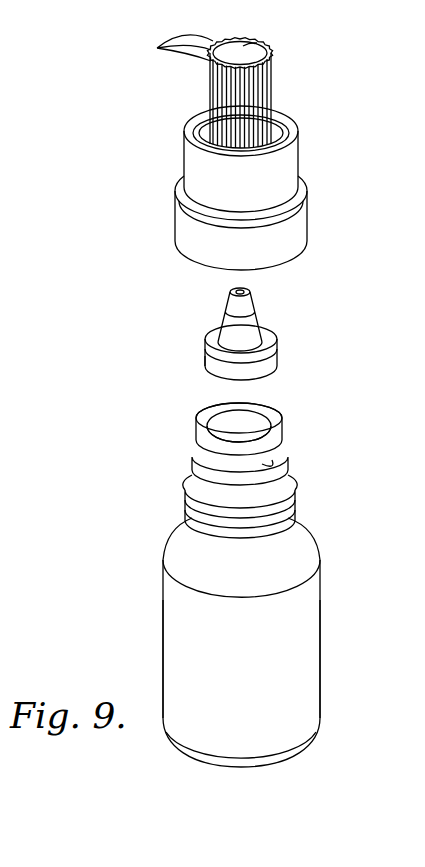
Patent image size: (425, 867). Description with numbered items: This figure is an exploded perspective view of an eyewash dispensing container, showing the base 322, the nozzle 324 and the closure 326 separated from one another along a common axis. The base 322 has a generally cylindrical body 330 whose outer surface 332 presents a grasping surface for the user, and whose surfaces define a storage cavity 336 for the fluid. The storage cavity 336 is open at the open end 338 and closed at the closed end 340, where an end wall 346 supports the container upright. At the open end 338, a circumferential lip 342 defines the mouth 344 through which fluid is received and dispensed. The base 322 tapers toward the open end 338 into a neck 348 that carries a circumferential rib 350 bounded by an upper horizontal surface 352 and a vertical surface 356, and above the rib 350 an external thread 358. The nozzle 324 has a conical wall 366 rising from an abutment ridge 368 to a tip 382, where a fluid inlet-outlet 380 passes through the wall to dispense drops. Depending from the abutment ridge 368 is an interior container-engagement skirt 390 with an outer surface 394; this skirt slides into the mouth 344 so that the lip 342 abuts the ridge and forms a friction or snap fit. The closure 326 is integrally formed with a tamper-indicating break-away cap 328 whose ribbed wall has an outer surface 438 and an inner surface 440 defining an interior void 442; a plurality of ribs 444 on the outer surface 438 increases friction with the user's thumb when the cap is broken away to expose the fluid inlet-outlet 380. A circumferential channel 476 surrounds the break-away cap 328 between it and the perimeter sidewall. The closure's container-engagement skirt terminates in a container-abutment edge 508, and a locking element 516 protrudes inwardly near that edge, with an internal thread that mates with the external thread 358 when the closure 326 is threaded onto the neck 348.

The base 322 is at (322, 600).
The nozzle 324 is at (281, 340).
The closure 326 is at (302, 168).
The break-away cap 328 is at (277, 80).
The body 330 is at (297, 651).
The outer surface 332 is at (302, 703).
The storage cavity 336 is at (255, 434).
The open end 338 is at (207, 404).
The closed end 340 is at (299, 760).
The circumferential lip 342 is at (203, 425).
The mouth 344 is at (249, 418).
The end wall 346 is at (300, 748).
The neck 348 is at (299, 462).
The circumferential rib 350 is at (304, 497).
The upper horizontal surface 352 is at (192, 492).
The vertical surface 356 is at (190, 508).
The external thread 358 is at (196, 460).
The conical wall 366 is at (254, 322).
The abutment ridge 368 is at (203, 333).
The fluid inlet-outlet 380 is at (249, 290).
The tip 382 is at (235, 290).
The interior container-engagement skirt 390 is at (281, 370).
The outer surface 394 is at (213, 367).
The outer surface 438 is at (266, 100).
The inner surface 440 is at (266, 50).
The interior void 442 is at (243, 48).
The ribs 444 is at (157, 48).
The circumferential channel 476 is at (278, 128).
The container-abutment edge 508 is at (303, 245).
The locking element 516 is at (310, 215).